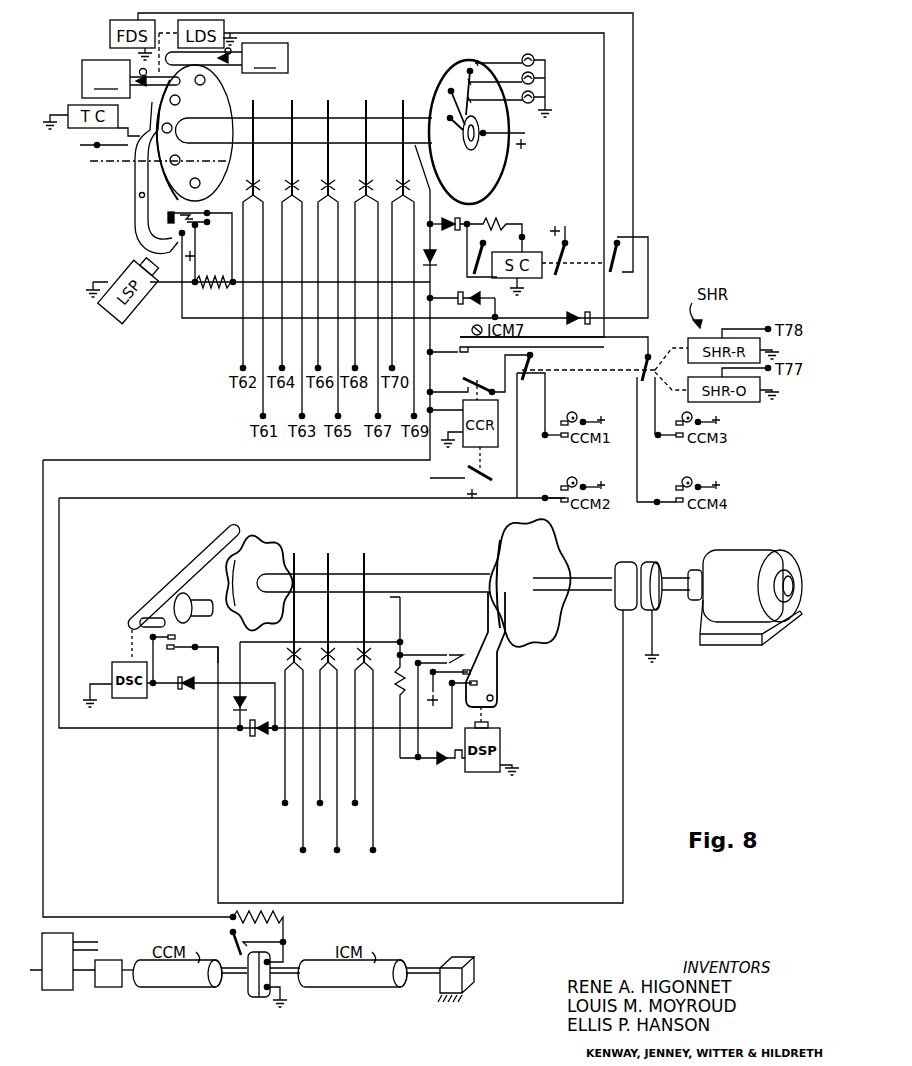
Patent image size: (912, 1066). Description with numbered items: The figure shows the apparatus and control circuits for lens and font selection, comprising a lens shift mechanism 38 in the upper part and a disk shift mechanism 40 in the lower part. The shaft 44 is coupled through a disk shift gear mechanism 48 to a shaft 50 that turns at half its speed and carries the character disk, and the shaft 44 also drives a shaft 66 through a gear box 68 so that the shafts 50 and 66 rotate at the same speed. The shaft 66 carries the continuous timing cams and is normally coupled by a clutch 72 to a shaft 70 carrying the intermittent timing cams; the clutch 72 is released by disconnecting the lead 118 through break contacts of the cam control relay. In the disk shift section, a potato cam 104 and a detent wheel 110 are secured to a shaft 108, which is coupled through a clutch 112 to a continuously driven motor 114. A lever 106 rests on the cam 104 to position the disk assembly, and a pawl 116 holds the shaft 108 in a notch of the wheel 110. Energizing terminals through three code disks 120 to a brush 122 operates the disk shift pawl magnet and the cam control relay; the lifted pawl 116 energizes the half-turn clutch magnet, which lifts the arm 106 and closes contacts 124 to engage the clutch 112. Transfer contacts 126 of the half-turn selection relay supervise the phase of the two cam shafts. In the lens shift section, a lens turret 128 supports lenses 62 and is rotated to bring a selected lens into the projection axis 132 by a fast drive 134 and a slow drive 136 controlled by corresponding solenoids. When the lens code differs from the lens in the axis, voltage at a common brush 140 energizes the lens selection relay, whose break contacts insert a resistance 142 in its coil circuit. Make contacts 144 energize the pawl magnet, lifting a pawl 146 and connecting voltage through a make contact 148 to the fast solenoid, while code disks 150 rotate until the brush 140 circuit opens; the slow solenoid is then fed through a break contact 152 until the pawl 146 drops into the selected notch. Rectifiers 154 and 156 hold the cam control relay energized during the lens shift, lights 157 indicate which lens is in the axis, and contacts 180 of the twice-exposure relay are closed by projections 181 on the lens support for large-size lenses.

The lens shift mechanism 38 is at (673, 96).
The disk shift mechanism 40 is at (680, 712).
The shaft 44 is at (82, 975).
The disk shift gear mechanism 48 is at (68, 973).
The shaft 50 is at (90, 940).
The lens 62 is at (224, 81).
The shaft 66 is at (236, 980).
The gear box 68 is at (106, 988).
The shaft 70 is at (292, 977).
The clutch 72 is at (256, 998).
The potato cam 104 is at (272, 545).
The lever 106 is at (210, 541).
The shaft 108 is at (385, 576).
The detent wheel 110 is at (558, 537).
The clutch 112 is at (640, 562).
The motor 114 is at (743, 597).
The pawl 116 is at (498, 677).
The lead 118 is at (45, 841).
The code disks 120 is at (305, 556).
The brush 122 is at (398, 622).
The contacts 124 is at (172, 652).
The transfer contacts 126 is at (642, 360).
The lens turret 128 is at (215, 107).
The projection axis 132 is at (80, 163).
The fast drive mechanism 134 is at (131, 79).
The slow drive mechanism 136 is at (227, 58).
The common brush 140 is at (430, 160).
The resistance 142 is at (497, 222).
The make contacts 144 is at (566, 262).
The pawl 146 is at (134, 220).
The make contact 148 is at (610, 280).
The code disks 150 is at (347, 104).
The break contact 152 is at (604, 148).
The rectifier 154 is at (435, 258).
The rectifier 156 is at (455, 297).
The lights 157 is at (545, 58).
The contacts 180 is at (104, 150).
The projections 181 is at (142, 130).